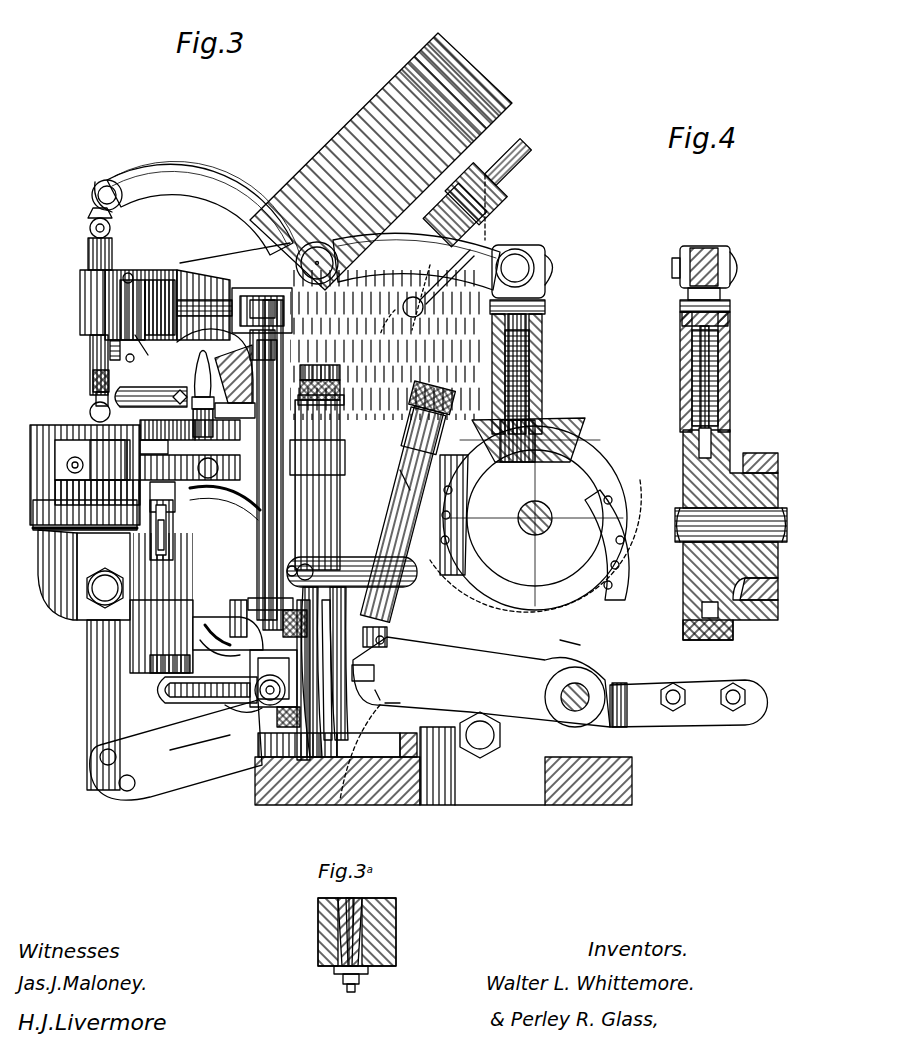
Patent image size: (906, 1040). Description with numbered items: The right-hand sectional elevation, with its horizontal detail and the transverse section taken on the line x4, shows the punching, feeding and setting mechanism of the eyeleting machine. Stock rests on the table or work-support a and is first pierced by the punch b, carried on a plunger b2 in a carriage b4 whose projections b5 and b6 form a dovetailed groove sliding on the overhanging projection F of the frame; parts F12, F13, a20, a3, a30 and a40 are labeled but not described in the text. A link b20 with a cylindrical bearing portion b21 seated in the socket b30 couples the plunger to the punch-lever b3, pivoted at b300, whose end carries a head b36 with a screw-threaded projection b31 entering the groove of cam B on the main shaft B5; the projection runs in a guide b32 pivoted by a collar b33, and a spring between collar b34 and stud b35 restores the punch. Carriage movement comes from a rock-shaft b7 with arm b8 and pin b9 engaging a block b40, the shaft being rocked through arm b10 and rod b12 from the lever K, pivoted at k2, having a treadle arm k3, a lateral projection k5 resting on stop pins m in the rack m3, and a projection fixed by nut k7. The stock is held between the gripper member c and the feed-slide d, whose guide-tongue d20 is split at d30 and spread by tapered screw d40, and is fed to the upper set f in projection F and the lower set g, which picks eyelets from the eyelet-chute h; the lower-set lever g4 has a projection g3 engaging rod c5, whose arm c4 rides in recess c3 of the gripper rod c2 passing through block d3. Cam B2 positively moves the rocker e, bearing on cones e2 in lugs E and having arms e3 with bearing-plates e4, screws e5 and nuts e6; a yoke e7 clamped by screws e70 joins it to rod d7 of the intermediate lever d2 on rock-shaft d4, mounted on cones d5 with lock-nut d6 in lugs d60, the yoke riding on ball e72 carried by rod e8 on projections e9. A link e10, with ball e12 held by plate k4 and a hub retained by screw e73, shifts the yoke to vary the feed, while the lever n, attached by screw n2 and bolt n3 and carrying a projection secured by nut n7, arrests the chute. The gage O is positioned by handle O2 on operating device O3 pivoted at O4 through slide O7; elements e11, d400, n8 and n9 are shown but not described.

In FIG. 3, the section line x4 is at (396, 161).
In FIG. 3, the punch-lever b3 is at (200, 209).
In FIG. 4, the punch-lever b3 is at (706, 258).
In FIG. 3, the upper cylindrical bearing portion b21 is at (103, 193).
In FIG. 3, the socket b30 is at (112, 180).
In FIG. 3, the link b20 is at (90, 228).
In FIG. 3, the plunger b2 is at (90, 348).
In FIG. 3, the overhanging projection F is at (198, 268).
In FIG. 3, the frame part F12 is at (95, 300).
In FIG. 3, the frame part F13 is at (250, 296).
In FIG. 3, the rock-shaft b7 is at (205, 302).
In FIG. 3, the punch-carriage b4 is at (90, 318).
In FIG. 3, the upper projection b5 is at (150, 285).
In FIG. 3, the block b40 is at (128, 273).
In FIG. 3, the arm b10 is at (276, 316).
In FIG. 3, the link or rod b12 is at (285, 375).
In FIG. 3, the punch b is at (92, 378).
In FIG. 3, the upper set or anvil f is at (95, 398).
In FIG. 3, the gripper member c is at (90, 412).
In FIG. 3, the feed-slide d is at (80, 418).
In FIG. 3, the pin b9 is at (122, 352).
In FIG. 3, the arm b8 is at (136, 366).
In FIG. 3, the lower projection b6 is at (153, 347).
In FIG. 3, the operating device O3 is at (152, 388).
In FIG. 3, the knob or handle O2 is at (203, 387).
In FIG. 3, the eyelet-chute h is at (233, 374).
In FIG. 3, the pivot O4 is at (235, 401).
In FIG. 3, the pivot b300 is at (322, 268).
In FIG. 3, the head b36 is at (540, 295).
In FIG. 4, the head b36 is at (730, 300).
In FIG. 3, the stud b35 is at (542, 310).
In FIG. 4, the stud b35 is at (730, 322).
In FIG. 3, the projection b31 is at (530, 335).
In FIG. 4, the projection b31 is at (728, 350).
In FIG. 3, the guide b32 is at (542, 355).
In FIG. 4, the guide b32 is at (730, 370).
In FIG. 3, the collar b34 is at (540, 400).
In FIG. 4, the collar b34 is at (730, 415).
In FIG. 3, the collar b33 is at (556, 420).
In FIG. 4, the collar b33 is at (733, 632).
In FIG. 3, the cam B is at (535, 506).
In FIG. 4, the cam B is at (705, 460).
In FIG. 3, the main shaft B5 is at (543, 530).
In FIG. 4, the main shaft B5 is at (782, 510).
In FIG. 3, the cam B2 is at (590, 450).
In FIG. 4, the cam B2 is at (762, 453).
In FIG. 3, the arms e3 is at (534, 535).
In FIG. 3, the bearing-plates e4 is at (452, 490).
In FIG. 3, the screws e5 is at (450, 515).
In FIG. 3, the nuts e6 is at (449, 540).
In FIG. 3, the projections e9 is at (420, 435).
In FIG. 3, the rod e8 is at (391, 479).
In FIG. 3, the cross bar e11 is at (352, 572).
In FIG. 3, the link e10 is at (352, 669).
In FIG. 3, the connecting member e7 is at (300, 585).
In FIG. 3, the screws e70 is at (328, 595).
In FIG. 3, the screw e73 is at (290, 566).
In FIG. 3, the ball e72 is at (395, 631).
In FIG. 3, the ball e12 is at (371, 676).
In FIG. 3, the lever K is at (553, 718).
In FIG. 3, the pivot k2 is at (585, 686).
In FIG. 3, the arm k3 is at (661, 697).
In FIG. 3, the screw n2 is at (745, 697).
In FIG. 3, the supplemental bolt n3 is at (676, 704).
In FIG. 3, the rocker or operating-lever e is at (582, 646).
In FIG. 3, the lateral projection k5 is at (401, 707).
In FIG. 3, the plate k4 is at (377, 695).
In FIG. 3, the lugs E is at (443, 766).
In FIG. 3, the adjustable cones e2 is at (478, 760).
In FIG. 3, the table or work-support a is at (60, 460).
In FIG. 3A, the table or work-support a is at (398, 912).
In FIG. 3, the pin a20 is at (62, 472).
In FIG. 3A, the pin a20 is at (360, 900).
In FIG. 3, the block a3 is at (110, 460).
In FIG. 3, the block d3 is at (141, 449).
In FIG. 3, the intermediate lever d2 is at (198, 463).
In FIG. 3, the guide-tongue d20 is at (190, 457).
In FIG. 3, the split d30 is at (97, 492).
In FIG. 3, the tapered screw d40 is at (85, 515).
In FIG. 3, the gage O is at (167, 430).
In FIG. 3, the slide O7 is at (217, 430).
In FIG. 3, the rod c2 is at (176, 492).
In FIG. 3, the recess c3 is at (172, 518).
In FIG. 3, the projection c4 is at (170, 530).
In FIG. 3, the rod d7 is at (300, 520).
In FIG. 3, the block d400 is at (255, 596).
In FIG. 3, the cones d5 is at (342, 450).
In FIG. 3, the rock-shaft d4 is at (320, 490).
In FIG. 3, the lock-nut d6 is at (329, 373).
In FIG. 3, the lugs d60 is at (322, 412).
In FIG. 3, the lower set g is at (87, 650).
In FIG. 3, the projection g3 is at (175, 765).
In FIG. 3, the lower set operating-lever g4 is at (210, 760).
In FIG. 3, the nut n7 is at (208, 690).
In FIG. 3, the lever n is at (248, 688).
In FIG. 3, the link n8 is at (243, 707).
In FIG. 3, the nut k7 is at (276, 714).
In FIG. 3, the rod c5 is at (160, 700).
In FIG. 3, the pin n9 is at (220, 620).
In FIG. 3, the stops m is at (269, 682).
In FIG. 3, the rack or support m3 is at (297, 763).
In FIG. 3A, the screw a30 is at (345, 898).
In FIG. 3A, the nut a40 is at (356, 988).